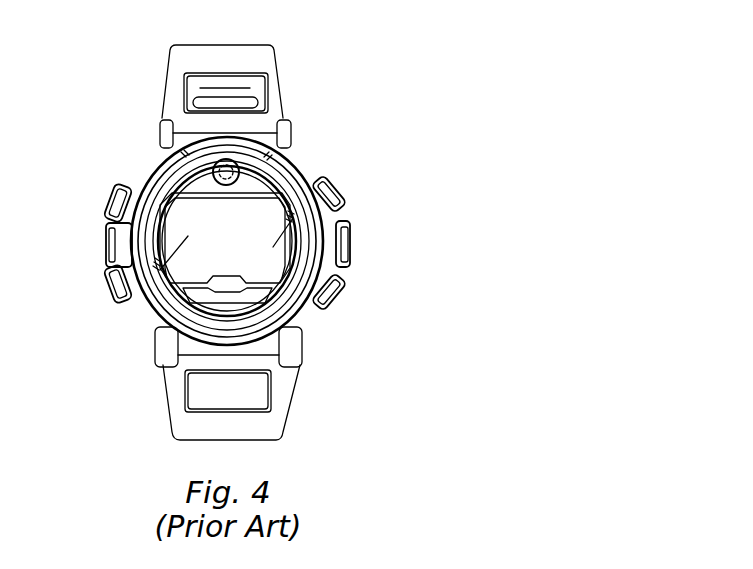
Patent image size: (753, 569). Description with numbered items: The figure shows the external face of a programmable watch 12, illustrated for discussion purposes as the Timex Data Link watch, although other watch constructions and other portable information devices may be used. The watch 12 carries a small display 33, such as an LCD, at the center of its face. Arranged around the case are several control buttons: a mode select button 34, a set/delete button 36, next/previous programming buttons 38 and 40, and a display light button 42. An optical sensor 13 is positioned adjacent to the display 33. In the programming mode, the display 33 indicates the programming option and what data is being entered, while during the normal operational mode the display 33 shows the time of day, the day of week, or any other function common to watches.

The programmable watch 12 is at (408, 83).
The optical sensor 13 is at (240, 172).
The display 33 is at (220, 205).
The mode select button 34 is at (352, 247).
The set/delete button 36 is at (342, 293).
The next/previous programming button 38 is at (337, 192).
The next/previous programming button 40 is at (107, 287).
The display light button 42 is at (108, 203).